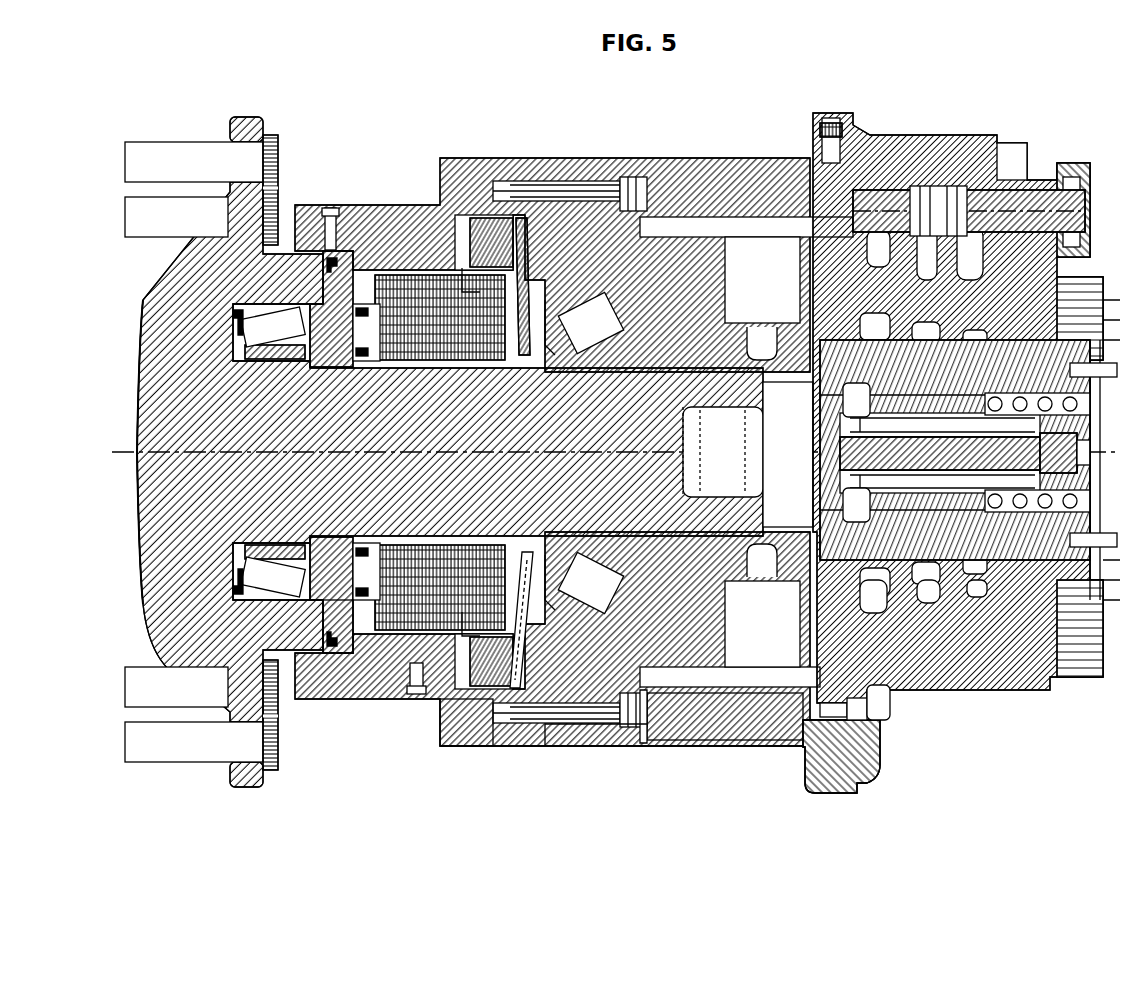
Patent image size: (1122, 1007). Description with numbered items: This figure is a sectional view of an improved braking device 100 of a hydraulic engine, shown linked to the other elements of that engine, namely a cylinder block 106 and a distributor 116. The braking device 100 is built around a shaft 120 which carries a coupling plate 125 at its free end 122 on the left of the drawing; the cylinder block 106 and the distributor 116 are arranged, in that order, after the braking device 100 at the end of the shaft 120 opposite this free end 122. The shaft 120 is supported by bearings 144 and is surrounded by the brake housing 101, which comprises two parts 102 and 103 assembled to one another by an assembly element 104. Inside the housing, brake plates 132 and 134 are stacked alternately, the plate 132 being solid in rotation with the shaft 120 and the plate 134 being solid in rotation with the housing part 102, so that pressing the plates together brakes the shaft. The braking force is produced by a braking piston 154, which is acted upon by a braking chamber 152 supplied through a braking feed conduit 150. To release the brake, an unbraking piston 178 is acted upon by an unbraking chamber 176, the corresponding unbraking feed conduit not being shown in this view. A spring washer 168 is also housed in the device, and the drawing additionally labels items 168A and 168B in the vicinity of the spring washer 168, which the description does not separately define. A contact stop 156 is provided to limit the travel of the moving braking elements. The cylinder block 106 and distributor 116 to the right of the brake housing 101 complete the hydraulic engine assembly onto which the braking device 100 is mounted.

The braking device 100 is at (508, 127).
The brake housing 101 is at (497, 750).
The brake housing part 102 is at (468, 722).
The brake housing part 103 is at (580, 742).
The assembly element 104 is at (567, 708).
The cylinder block 106 is at (697, 288).
The distributor 116 is at (1035, 193).
The shaft 120 is at (218, 483).
The free end 122 is at (160, 416).
The coupling plate 125 is at (243, 713).
The plate 132 is at (363, 633).
The plate 134 is at (405, 680).
The bearings 144 is at (250, 330).
The braking feed conduit 150 is at (318, 260).
The braking chamber 152 is at (263, 320).
The braking piston 154 is at (348, 313).
The contact stop 156 is at (585, 330).
The spring washer 168 is at (523, 280).
The sensor plate 168A is at (530, 643).
The sensor bolt 168B is at (690, 693).
The unbraking chamber 176 is at (470, 255).
The unbraking piston 178 is at (485, 243).